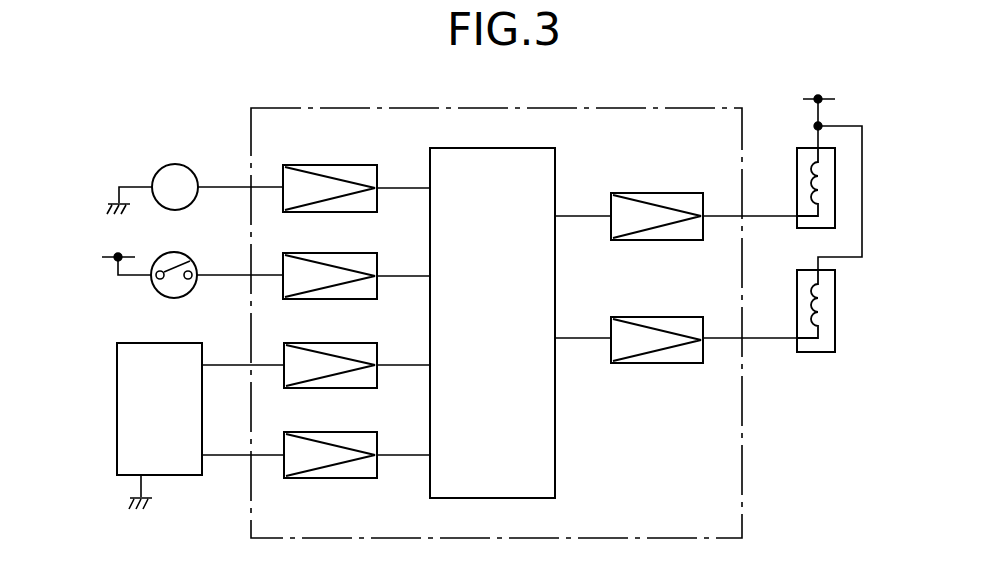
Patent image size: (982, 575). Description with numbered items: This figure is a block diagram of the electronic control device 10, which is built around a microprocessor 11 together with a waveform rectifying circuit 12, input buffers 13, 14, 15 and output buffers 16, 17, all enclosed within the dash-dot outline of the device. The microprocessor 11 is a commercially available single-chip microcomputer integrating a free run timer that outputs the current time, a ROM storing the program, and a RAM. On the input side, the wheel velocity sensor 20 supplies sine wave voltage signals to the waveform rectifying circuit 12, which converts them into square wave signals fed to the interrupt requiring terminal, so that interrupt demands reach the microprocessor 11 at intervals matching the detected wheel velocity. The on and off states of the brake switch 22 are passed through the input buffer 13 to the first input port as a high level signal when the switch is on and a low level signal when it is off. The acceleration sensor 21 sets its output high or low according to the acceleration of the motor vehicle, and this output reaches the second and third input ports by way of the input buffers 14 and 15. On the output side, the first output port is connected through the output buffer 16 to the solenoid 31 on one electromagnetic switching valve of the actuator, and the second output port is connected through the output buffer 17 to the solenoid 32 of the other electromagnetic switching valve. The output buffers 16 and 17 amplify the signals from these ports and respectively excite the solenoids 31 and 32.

The electronic control device 10 is at (742, 460).
The microprocessor 11 is at (555, 420).
The waveform rectifying circuit 12 is at (338, 164).
The input buffer 13 is at (338, 252).
The input buffer 14 is at (338, 342).
The input buffer 15 is at (336, 431).
The output buffer 16 is at (655, 192).
The output buffer 17 is at (648, 316).
The wheel velocity sensor 20 is at (177, 164).
The acceleration sensor 21 is at (170, 476).
The brake switch 22 is at (178, 252).
The solenoid 31 is at (795, 190).
The solenoid 32 is at (795, 310).